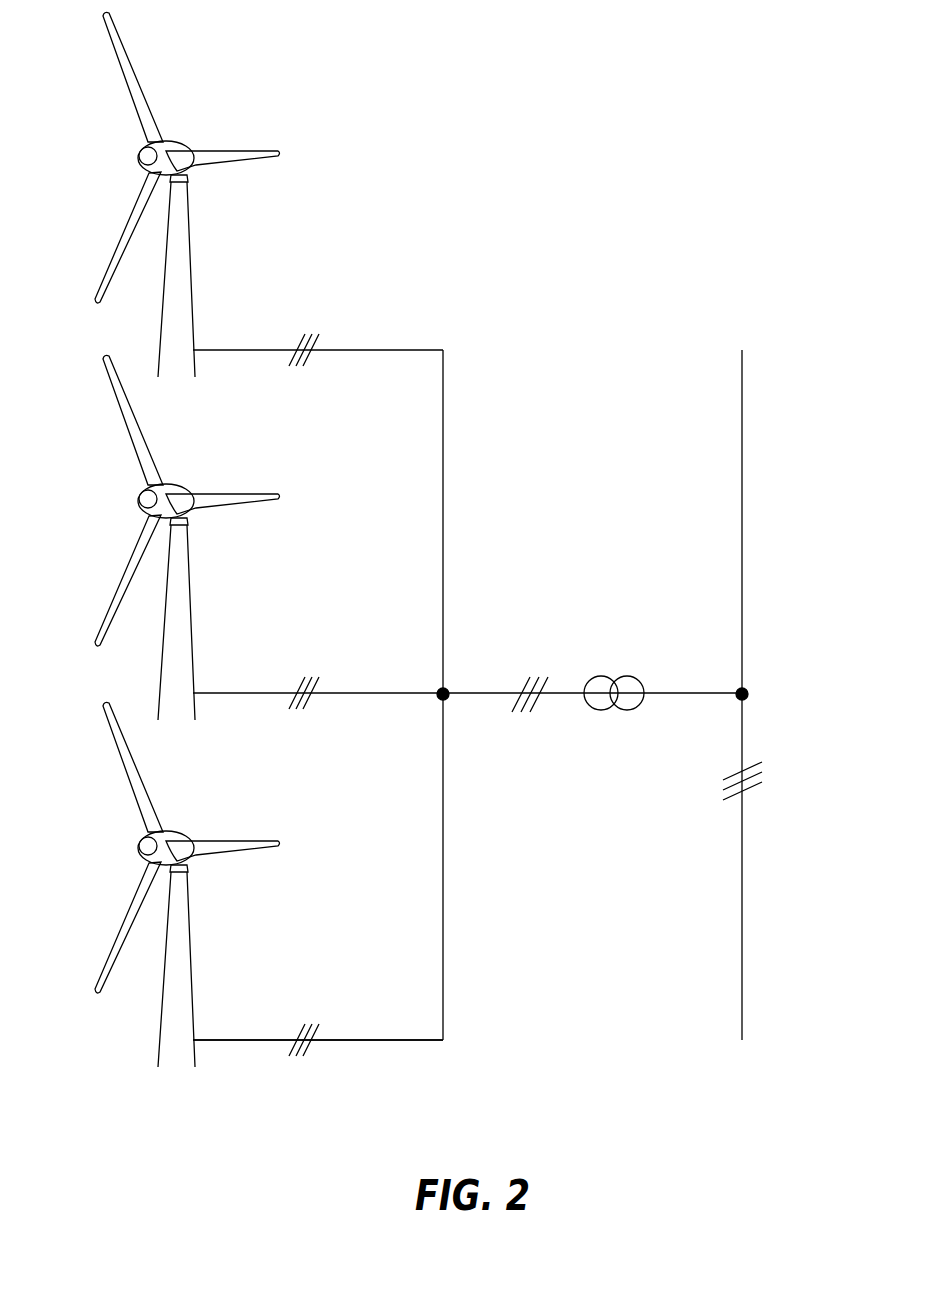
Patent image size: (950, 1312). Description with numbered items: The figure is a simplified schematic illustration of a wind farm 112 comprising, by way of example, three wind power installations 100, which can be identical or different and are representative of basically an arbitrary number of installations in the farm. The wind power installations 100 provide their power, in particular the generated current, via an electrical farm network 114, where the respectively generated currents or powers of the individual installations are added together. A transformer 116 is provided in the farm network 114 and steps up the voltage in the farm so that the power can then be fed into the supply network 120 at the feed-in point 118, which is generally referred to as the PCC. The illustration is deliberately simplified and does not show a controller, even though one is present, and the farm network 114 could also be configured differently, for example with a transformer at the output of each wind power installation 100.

The wind power installation 100 is at (181, 257).
The wind farm 112 is at (525, 155).
The electrical farm network 114 is at (467, 692).
The transformer 116 is at (617, 666).
The feed-in point 118 is at (757, 673).
The supply network 120 is at (742, 387).